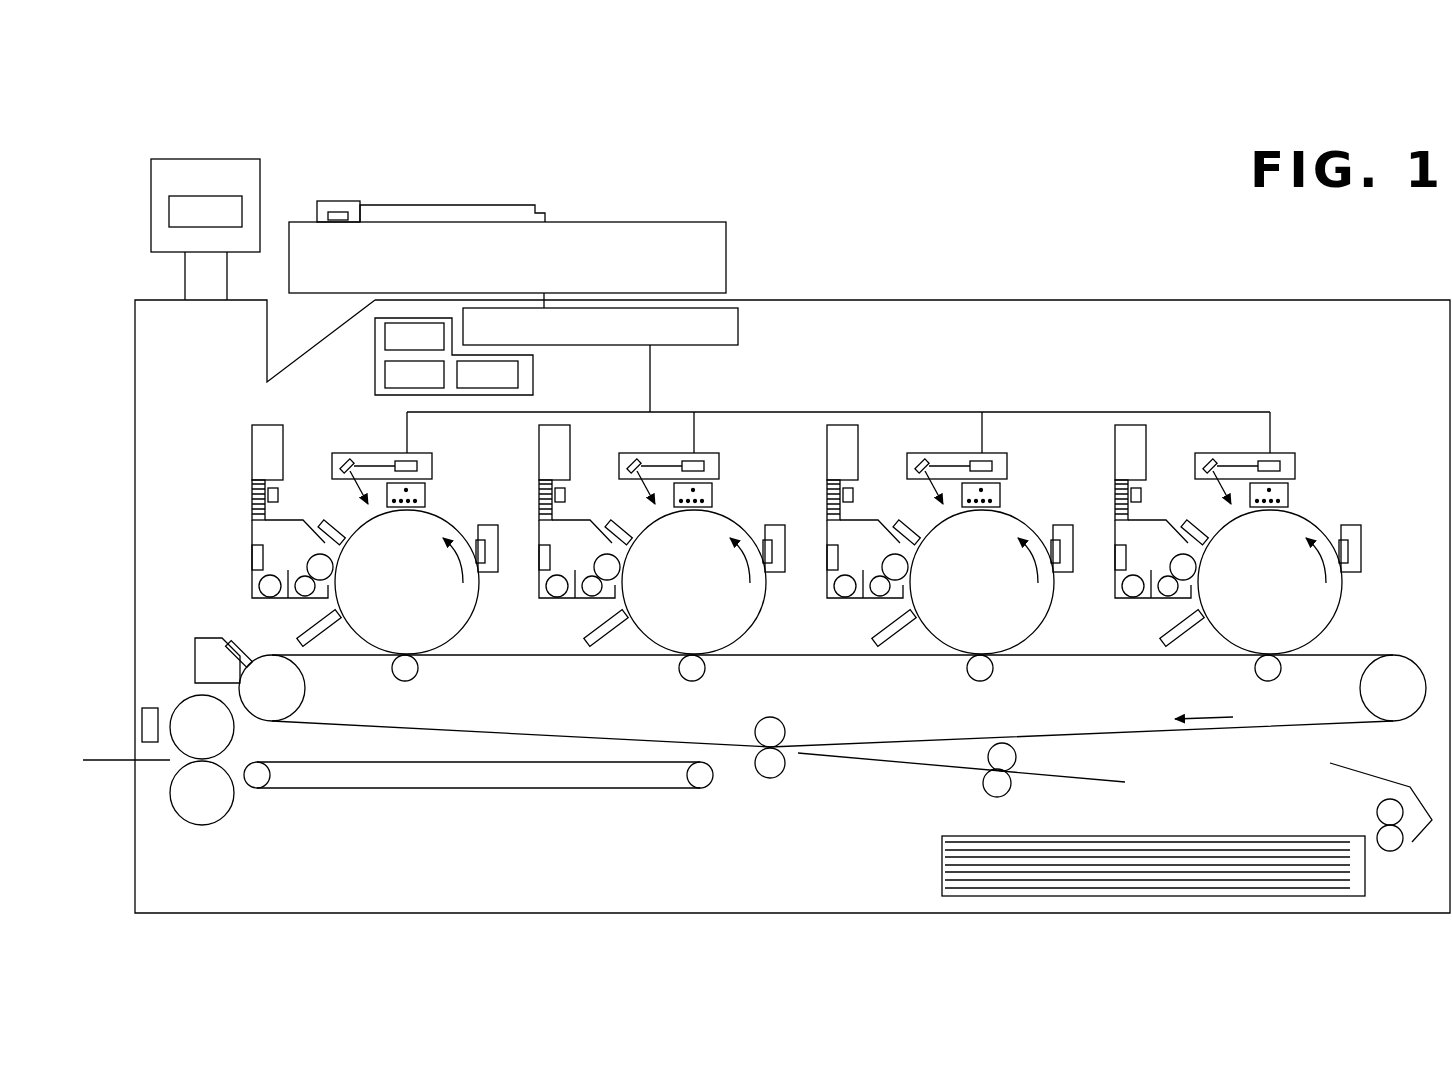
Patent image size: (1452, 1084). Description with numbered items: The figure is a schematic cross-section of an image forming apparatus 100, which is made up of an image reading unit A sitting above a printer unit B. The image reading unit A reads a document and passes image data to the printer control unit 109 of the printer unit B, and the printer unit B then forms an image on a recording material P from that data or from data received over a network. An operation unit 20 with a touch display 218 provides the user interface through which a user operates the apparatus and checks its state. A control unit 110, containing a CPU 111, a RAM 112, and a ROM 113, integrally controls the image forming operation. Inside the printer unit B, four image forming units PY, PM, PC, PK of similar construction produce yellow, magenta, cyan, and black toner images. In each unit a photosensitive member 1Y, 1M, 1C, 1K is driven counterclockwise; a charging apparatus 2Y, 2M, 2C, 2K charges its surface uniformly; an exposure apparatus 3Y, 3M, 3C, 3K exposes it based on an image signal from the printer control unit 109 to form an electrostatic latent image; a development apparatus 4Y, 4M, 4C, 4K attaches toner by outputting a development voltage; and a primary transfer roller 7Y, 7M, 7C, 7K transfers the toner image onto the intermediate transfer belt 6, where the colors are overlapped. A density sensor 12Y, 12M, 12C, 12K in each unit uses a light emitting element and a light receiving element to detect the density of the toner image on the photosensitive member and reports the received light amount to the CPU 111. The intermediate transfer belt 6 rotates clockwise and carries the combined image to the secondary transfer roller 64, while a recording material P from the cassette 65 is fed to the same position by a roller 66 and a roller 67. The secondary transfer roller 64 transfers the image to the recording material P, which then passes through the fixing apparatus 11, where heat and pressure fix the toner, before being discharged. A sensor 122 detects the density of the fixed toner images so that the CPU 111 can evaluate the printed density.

The image forming apparatus 100 is at (862, 164).
The operation unit 20 is at (237, 159).
The touch display 218 is at (192, 196).
The image reading unit A is at (742, 259).
The printer unit B is at (1120, 294).
The control unit 110 is at (376, 326).
The printer control unit 109 is at (740, 330).
The ROM 113 is at (385, 347).
The CPU 111 is at (385, 376).
The RAM 112 is at (519, 375).
The image forming unit PY is at (462, 476).
The image forming unit PM is at (654, 557).
The image forming unit PC is at (937, 557).
The image forming unit PK is at (1225, 557).
The photosensitive member 1Y is at (466, 615).
The photosensitive member 1M is at (717, 582).
The photosensitive member 1C is at (1002, 582).
The photosensitive member 1K is at (1291, 582).
The charging apparatus 2Y is at (426, 494).
The charging apparatus 2M is at (724, 500).
The charging apparatus 2C is at (1009, 500).
The charging apparatus 2K is at (1298, 500).
The exposure apparatus 3Y is at (366, 452).
The exposure apparatus 3M is at (656, 458).
The exposure apparatus 3C is at (945, 458).
The exposure apparatus 3K is at (1232, 458).
The development apparatus 4Y is at (252, 530).
The development apparatus 4M is at (564, 511).
The development apparatus 4C is at (850, 511).
The development apparatus 4K is at (1137, 511).
The primary transfer roller 7Y is at (416, 677).
The primary transfer roller 7M is at (720, 678).
The primary transfer roller 7C is at (1005, 678).
The primary transfer roller 7K is at (1294, 678).
The density sensor 12Y is at (298, 628).
The density sensor 12M is at (577, 627).
The density sensor 12C is at (866, 627).
The density sensor 12K is at (1154, 627).
The intermediate transfer belt 6 is at (1275, 729).
The sensor 122 is at (142, 716).
The fixing apparatus 11 is at (205, 826).
The secondary transfer roller 64 is at (782, 776).
The roller 67 is at (1017, 757).
The recording material P is at (1120, 782).
The cassette 65 is at (942, 864).
The roller 66 is at (1390, 851).